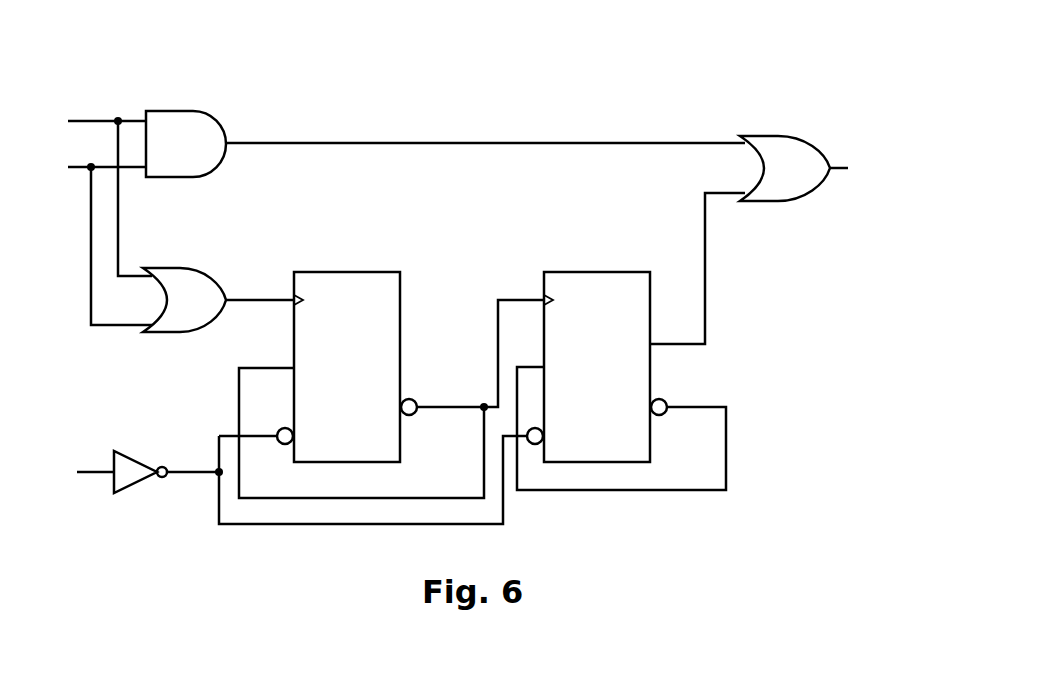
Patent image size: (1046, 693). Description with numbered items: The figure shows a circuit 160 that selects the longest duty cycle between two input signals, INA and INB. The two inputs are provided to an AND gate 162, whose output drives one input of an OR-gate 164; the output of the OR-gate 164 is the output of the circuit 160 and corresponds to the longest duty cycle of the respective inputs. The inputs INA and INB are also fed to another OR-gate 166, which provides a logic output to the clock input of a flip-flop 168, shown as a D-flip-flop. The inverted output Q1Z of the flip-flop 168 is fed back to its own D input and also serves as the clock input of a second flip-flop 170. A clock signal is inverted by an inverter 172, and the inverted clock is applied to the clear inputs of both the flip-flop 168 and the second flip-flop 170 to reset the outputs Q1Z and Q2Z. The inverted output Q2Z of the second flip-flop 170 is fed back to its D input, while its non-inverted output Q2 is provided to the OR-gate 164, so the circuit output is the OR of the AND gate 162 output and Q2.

The circuit 160 is at (803, 86).
The AND gate 162 is at (182, 111).
The OR-gate 164 is at (780, 136).
The OR-gate 166 is at (180, 268).
The flip-flop 168 is at (351, 272).
The second flip-flop 170 is at (590, 272).
The inverter 172 is at (137, 458).